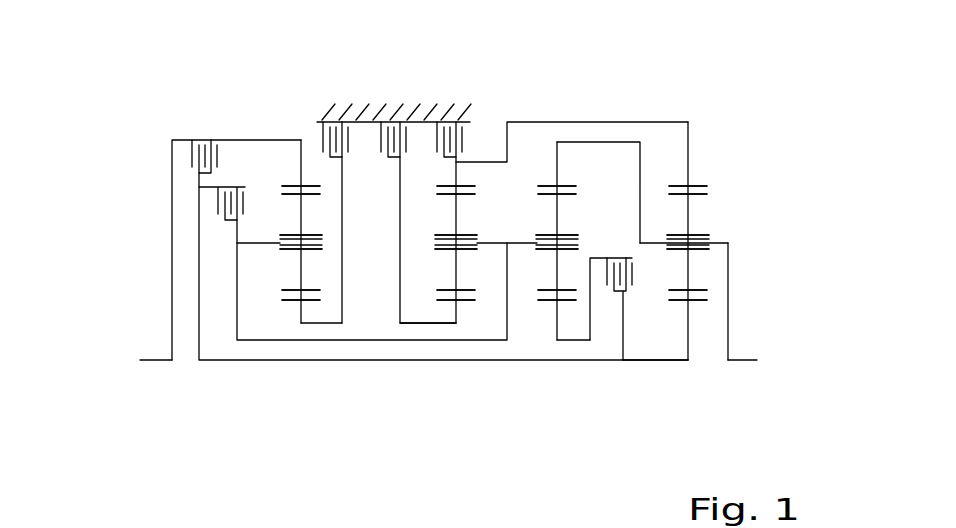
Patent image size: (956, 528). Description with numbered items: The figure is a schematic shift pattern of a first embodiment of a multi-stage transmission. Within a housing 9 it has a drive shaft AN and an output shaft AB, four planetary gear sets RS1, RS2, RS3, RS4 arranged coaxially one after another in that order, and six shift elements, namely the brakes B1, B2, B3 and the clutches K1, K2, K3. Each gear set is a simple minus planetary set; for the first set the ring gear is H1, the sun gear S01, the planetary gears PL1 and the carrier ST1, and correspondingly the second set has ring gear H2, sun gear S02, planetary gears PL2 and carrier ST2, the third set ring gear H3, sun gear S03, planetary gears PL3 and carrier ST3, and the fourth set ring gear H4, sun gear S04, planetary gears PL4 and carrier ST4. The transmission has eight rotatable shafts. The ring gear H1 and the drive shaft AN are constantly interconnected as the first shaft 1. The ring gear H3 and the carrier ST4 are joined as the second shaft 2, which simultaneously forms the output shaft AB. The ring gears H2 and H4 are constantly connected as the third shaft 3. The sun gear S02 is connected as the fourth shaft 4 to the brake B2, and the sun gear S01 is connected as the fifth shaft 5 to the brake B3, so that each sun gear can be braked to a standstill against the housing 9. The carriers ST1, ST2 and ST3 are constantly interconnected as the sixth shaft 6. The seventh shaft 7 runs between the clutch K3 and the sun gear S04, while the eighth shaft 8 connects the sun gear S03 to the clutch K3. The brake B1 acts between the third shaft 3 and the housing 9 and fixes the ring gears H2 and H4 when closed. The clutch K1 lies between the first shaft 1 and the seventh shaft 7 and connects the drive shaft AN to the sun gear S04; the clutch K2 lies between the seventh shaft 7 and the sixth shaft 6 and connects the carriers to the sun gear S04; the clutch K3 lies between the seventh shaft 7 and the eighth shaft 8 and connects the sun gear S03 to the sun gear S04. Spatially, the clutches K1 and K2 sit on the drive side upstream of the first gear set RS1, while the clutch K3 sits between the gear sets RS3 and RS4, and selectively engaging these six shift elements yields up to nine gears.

The first shaft 1 is at (172, 178).
The second shaft 2 is at (728, 307).
The third shaft 3 is at (688, 122).
The fourth shaft 4 is at (401, 177).
The fifth shaft 5 is at (343, 178).
The sixth shaft 6 is at (325, 341).
The seventh shaft 7 is at (338, 362).
The eighth shaft 8 is at (577, 342).
The housing 9 is at (450, 123).
The drive shaft AN is at (171, 359).
The output shaft AB is at (753, 358).
The first clutch K1 is at (196, 152).
The second clutch K2 is at (219, 206).
The third clutch K3 is at (632, 272).
The first brake B1 is at (438, 123).
The second brake B2 is at (383, 122).
The third brake B3 is at (323, 124).
The planetary gears of the first planetary gear set PL1 is at (298, 214).
The planetary gears of the second planetary gear set PL2 is at (455, 207).
The planetary gears of the third planetary gear set PL3 is at (558, 218).
The planetary gears of the fourth planetary gear set PL4 is at (688, 213).
The first planetary gear set RS1 is at (251, 295).
The second planetary gear set RS2 is at (440, 314).
The third planetary gear set RS3 is at (541, 318).
The fourth planetary gear set RS4 is at (695, 330).
The ring gear of the first planetary gear set H1 is at (302, 156).
The ring gear of the second planetary gear set H2 is at (456, 172).
The ring gear of the third planetary gear set H3 is at (558, 172).
The ring gear of the fourth planetary gear set H4 is at (688, 163).
The carrier of the first planetary gear set ST1 is at (297, 236).
The carrier of the second planetary gear set ST2 is at (492, 243).
The carrier of the third planetary gear set ST3 is at (523, 243).
The carrier of the fourth planetary gear set ST4 is at (718, 243).
The sun gear of the first planetary gear set S01 is at (296, 302).
The sun gear of the second planetary gear set S02 is at (458, 304).
The sun gear of the third planetary gear set S03 is at (560, 305).
The sun gear of the fourth planetary gear set S04 is at (700, 304).